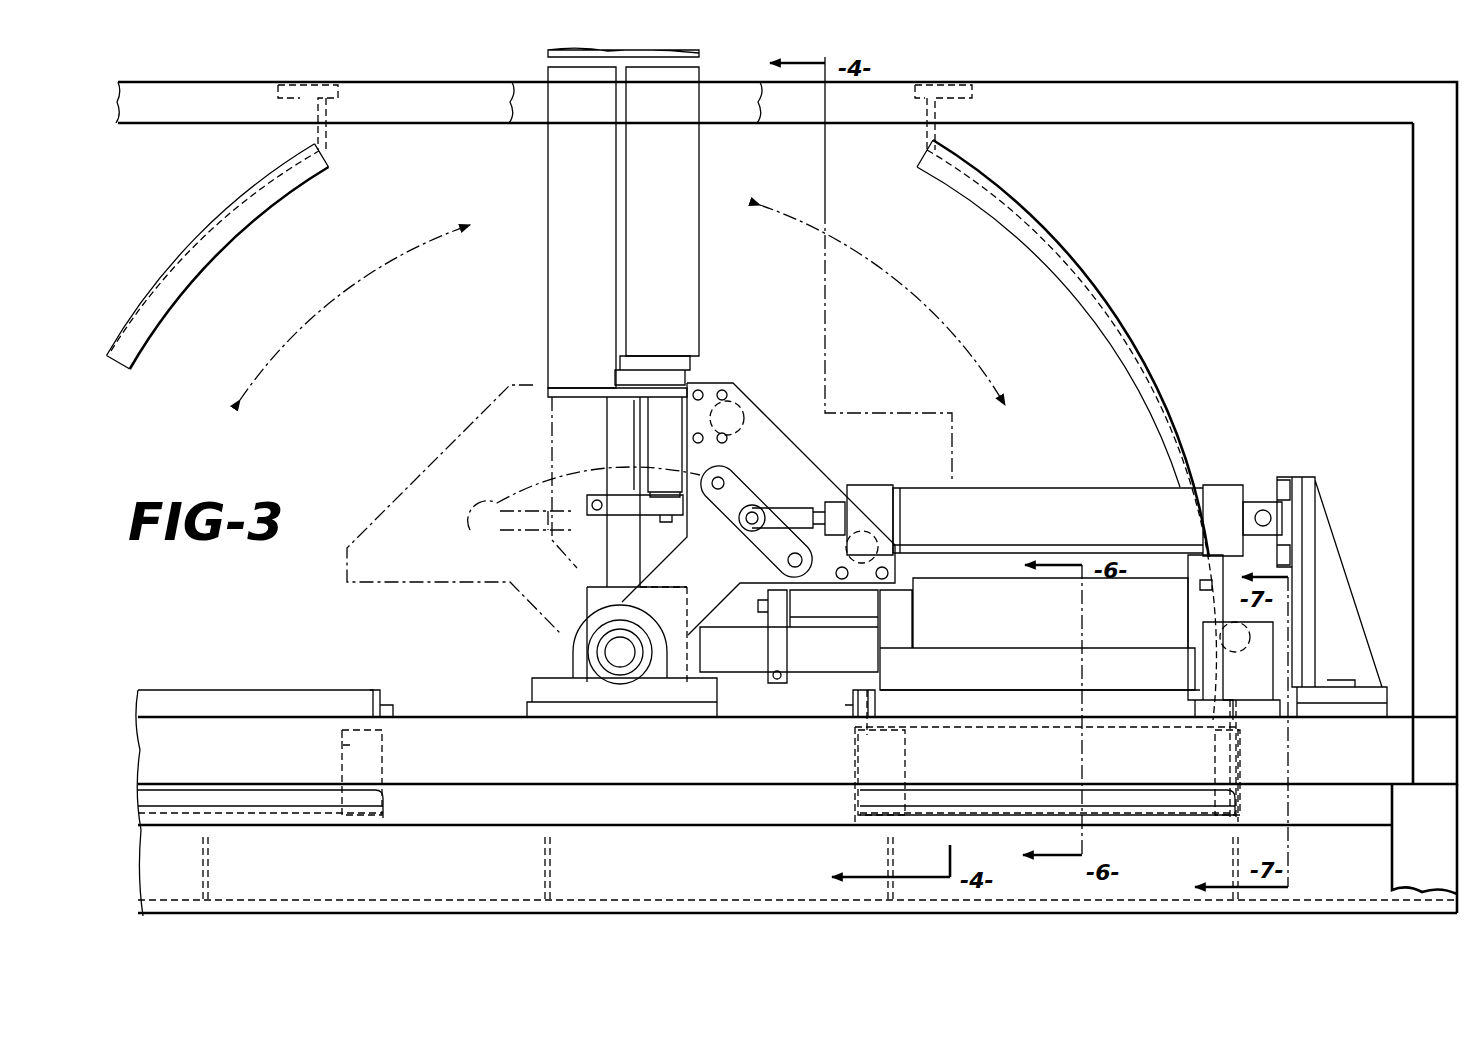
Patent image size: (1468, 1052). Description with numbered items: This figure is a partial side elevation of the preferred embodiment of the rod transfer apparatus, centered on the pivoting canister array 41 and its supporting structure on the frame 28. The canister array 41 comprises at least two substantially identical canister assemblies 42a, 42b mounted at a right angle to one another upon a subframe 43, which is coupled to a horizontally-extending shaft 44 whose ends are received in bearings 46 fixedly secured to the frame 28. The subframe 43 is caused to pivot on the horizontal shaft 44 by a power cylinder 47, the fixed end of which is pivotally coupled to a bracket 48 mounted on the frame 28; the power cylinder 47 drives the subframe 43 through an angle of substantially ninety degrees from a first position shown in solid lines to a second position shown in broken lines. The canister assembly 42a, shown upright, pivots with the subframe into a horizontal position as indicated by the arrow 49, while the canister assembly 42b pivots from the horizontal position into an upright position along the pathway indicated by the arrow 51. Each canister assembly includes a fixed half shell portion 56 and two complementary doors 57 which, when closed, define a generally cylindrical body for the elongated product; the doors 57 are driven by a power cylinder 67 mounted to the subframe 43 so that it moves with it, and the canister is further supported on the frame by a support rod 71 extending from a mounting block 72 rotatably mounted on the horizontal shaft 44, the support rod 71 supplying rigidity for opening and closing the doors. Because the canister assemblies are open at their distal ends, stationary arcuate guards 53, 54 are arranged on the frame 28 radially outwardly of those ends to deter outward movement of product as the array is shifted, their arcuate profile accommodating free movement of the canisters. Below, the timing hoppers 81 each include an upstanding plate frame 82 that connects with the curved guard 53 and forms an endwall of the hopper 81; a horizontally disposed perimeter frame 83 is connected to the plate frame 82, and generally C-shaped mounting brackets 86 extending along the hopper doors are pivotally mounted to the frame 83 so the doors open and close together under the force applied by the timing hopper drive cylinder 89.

The frame 28 is at (1232, 112).
The canister array 41 is at (533, 302).
The canister assembly 42a is at (702, 307).
The canister assembly 42b is at (980, 577).
The subframe 43 is at (424, 450).
The horizontally-extending shaft 44 is at (616, 652).
The bearings 46 is at (657, 677).
The power cylinder 47 is at (1076, 488).
The bracket 48 is at (1316, 490).
The arrow 49 is at (344, 278).
The arrow 51 is at (896, 284).
The stationary guard 53 is at (1132, 318).
The stationary guard 54 is at (195, 238).
The fixed half shell portion 56 is at (548, 246).
The doors 57 is at (690, 272).
The power cylinder 67 is at (734, 392).
The support rod 71 is at (605, 448).
The mounting block 72 is at (560, 614).
The timing hopper 81 is at (275, 688).
The upstanding plate frame 82 is at (342, 748).
The perimeter frame 83 is at (372, 690).
The mounting brackets 86 is at (385, 810).
The timing hopper drive cylinder 89 is at (1228, 640).